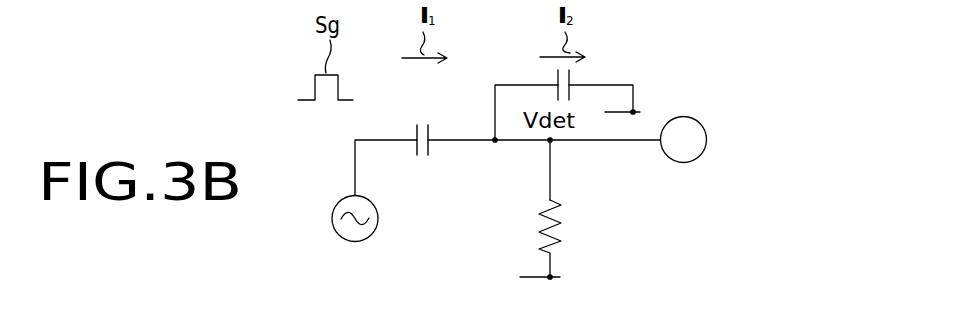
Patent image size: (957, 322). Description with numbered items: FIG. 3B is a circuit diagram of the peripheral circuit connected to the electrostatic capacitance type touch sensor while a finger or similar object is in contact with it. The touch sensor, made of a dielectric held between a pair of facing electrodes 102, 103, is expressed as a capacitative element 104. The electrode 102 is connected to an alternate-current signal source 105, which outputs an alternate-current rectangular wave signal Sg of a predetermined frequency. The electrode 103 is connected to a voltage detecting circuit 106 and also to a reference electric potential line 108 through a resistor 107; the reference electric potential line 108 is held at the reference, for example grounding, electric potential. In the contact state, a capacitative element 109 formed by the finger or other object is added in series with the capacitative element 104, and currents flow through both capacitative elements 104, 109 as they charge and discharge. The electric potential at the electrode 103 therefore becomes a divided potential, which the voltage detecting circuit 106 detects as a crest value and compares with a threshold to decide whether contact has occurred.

The electrode 102 is at (413, 126).
The electrode 103 is at (432, 126).
The capacitative element 104 is at (433, 171).
The alternate-current signal source 105 is at (356, 242).
The voltage detecting circuit 106 is at (707, 140).
The resistor 107 is at (562, 218).
The reference electric potential line 108 is at (562, 277).
The capacitative element 109 is at (587, 73).